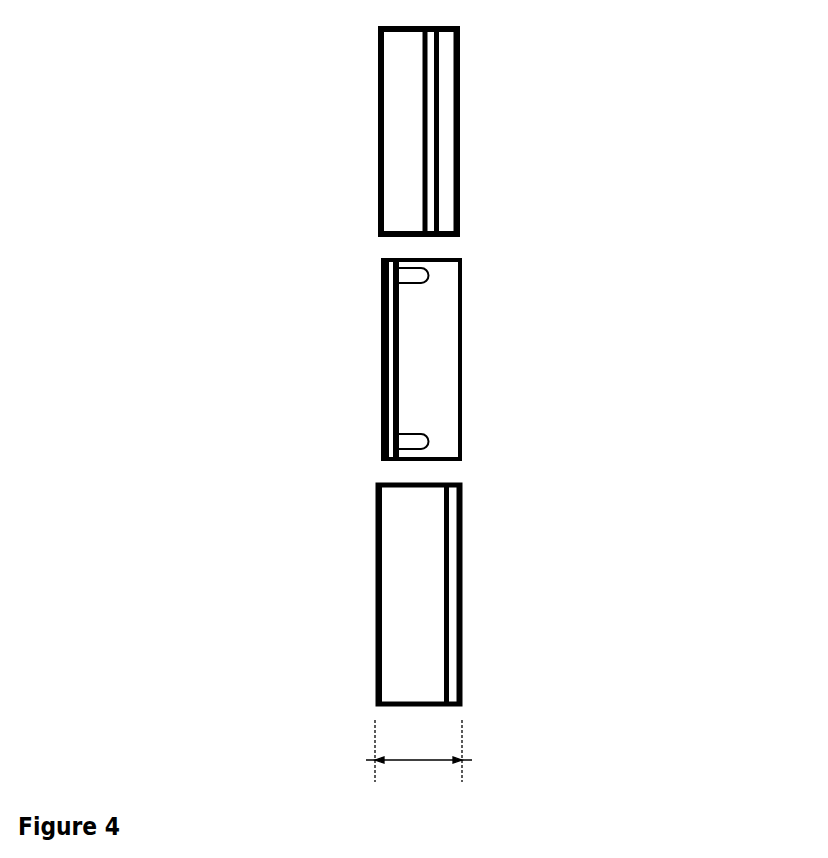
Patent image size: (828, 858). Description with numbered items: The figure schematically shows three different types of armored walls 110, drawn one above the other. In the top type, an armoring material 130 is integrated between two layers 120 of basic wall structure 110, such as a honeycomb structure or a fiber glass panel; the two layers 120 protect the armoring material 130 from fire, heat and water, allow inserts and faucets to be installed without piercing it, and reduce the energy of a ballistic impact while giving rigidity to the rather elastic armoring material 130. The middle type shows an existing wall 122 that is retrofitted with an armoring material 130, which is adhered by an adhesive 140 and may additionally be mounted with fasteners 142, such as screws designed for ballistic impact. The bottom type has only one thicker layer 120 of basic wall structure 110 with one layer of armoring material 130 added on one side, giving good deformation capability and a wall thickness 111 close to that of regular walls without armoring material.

The armored wall 110 is at (598, 69).
The wall thickness 111 is at (419, 755).
The layer of basic wall structure 120 is at (400, 58).
The existing wall 122 is at (445, 408).
The armoring material 130 is at (418, 143).
The adhesive 140 is at (393, 394).
The fastener 142 is at (397, 276).